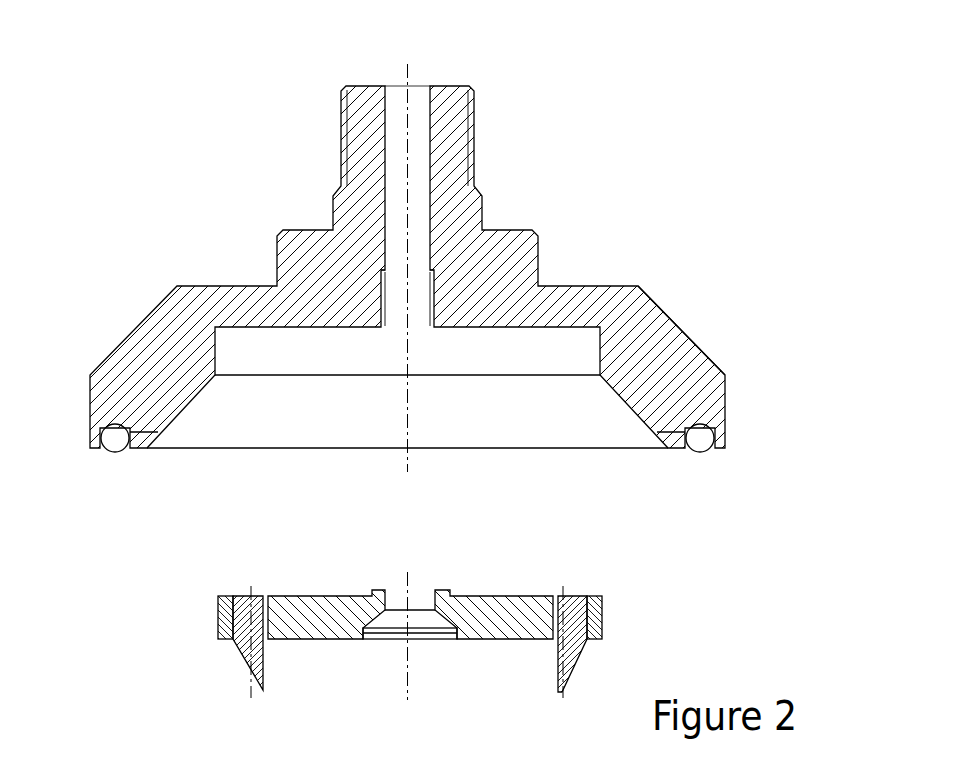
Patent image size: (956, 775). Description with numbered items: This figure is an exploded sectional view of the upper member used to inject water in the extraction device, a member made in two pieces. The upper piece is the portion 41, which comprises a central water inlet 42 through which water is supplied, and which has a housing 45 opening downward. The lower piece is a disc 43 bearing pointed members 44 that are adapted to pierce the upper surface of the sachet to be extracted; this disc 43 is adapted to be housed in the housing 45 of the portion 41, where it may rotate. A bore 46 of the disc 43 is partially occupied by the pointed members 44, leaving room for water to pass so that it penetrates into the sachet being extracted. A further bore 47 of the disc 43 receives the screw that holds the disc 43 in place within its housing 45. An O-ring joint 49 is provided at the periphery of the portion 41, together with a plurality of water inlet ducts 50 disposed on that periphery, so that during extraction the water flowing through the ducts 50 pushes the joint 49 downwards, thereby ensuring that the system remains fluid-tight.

The portion 41 is at (688, 337).
The central water inlet 42 is at (410, 85).
The disc 43 is at (218, 613).
The pointed members 44 is at (237, 658).
The housing 45 is at (611, 330).
The bore 46 is at (555, 597).
The bore 47 is at (400, 645).
The O-ring joint 49 is at (115, 460).
The water inlet ducts 50 is at (150, 440).